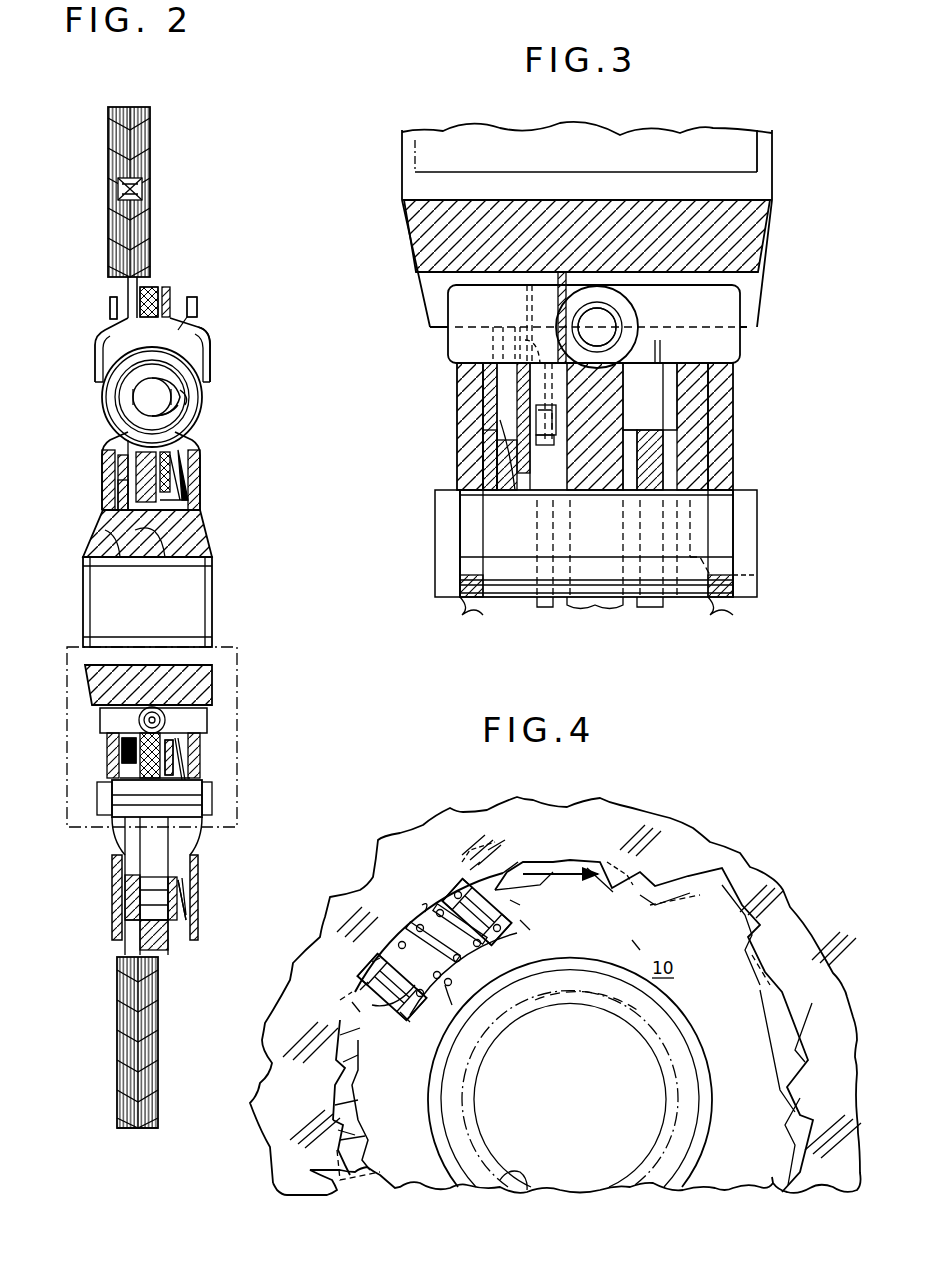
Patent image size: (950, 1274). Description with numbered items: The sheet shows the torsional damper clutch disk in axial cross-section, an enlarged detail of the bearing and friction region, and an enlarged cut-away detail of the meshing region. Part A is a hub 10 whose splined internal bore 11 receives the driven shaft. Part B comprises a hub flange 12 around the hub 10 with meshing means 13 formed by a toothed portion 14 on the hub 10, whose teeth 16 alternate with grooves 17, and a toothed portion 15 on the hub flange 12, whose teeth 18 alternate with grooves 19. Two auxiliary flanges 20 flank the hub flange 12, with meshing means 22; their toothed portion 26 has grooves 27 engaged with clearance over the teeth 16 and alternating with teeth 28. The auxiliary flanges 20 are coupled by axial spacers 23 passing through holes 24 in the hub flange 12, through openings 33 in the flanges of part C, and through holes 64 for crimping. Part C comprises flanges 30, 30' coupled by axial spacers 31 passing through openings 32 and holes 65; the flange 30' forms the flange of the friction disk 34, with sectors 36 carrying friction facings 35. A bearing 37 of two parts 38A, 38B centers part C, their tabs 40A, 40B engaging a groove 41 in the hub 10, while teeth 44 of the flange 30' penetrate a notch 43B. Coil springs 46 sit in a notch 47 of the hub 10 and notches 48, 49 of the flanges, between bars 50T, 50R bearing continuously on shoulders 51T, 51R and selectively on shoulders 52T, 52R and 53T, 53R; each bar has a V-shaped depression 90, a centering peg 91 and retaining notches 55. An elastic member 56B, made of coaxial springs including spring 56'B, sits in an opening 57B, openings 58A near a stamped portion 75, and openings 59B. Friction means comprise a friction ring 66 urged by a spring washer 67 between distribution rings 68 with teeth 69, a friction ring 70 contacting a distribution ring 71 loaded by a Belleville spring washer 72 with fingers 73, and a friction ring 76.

In FIG. 2, the hub 10 is at (210, 530).
In FIG. 3, the hub 10 is at (778, 178).
In FIG. 4, the hub 10 is at (551, 996).
In FIG. 3, the internal bore 11 is at (415, 172).
In FIG. 4, the internal bore 11 is at (535, 1192).
In FIG. 2, the hub flange 12 is at (152, 285).
In FIG. 3, the hub flange 12 is at (606, 608).
In FIG. 4, the hub flange 12 is at (815, 1000).
In FIG. 4, the meshing means 13 is at (738, 962).
In FIG. 4, the toothed portion 14 is at (750, 880).
In FIG. 4, the toothed portion 15 is at (748, 980).
In FIG. 4, the teeth 16 is at (572, 862).
In FIG. 4, the grooves 17 is at (708, 920).
In FIG. 4, the teeth 18 is at (715, 1000).
In FIG. 4, the grooves 19 is at (735, 922).
In FIG. 2, the auxiliary flange 20 is at (112, 880).
In FIG. 3, the auxiliary flange 20 is at (455, 415).
In FIG. 4, the auxiliary flange 20 is at (610, 830).
In FIG. 4, the meshing means 22 is at (605, 895).
In FIG. 2, the axial spacers 23 is at (112, 825).
In FIG. 3, the axial spacers 23 is at (606, 570).
In FIG. 2, the holes 24 is at (125, 780).
In FIG. 3, the holes 24 is at (625, 490).
In FIG. 4, the toothed portion 26 is at (620, 900).
In FIG. 4, the groove 27 is at (555, 862).
In FIG. 4, the teeth 28 is at (355, 1130).
In FIG. 2, the flange 30 is at (215, 298).
In FIG. 3, the flange 30 is at (660, 625).
In FIG. 2, the flange 30' is at (95, 288).
In FIG. 3, the flange 30' is at (529, 625).
In FIG. 2, the axial spacers 31 is at (158, 950).
In FIG. 2, the openings 32 is at (135, 920).
In FIG. 2, the openings 33 is at (120, 760).
In FIG. 2, the friction disk 34 is at (118, 1112).
In FIG. 2, the friction facings 35 is at (148, 1130).
In FIG. 2, the sectors 36 is at (125, 128).
In FIG. 2, the bearing 37 is at (107, 600).
In FIG. 3, the bearing 37 is at (580, 375).
In FIG. 2, the bearing part 38A is at (112, 488).
In FIG. 2, the bearing part 38B is at (118, 680).
In FIG. 3, the bearing part 38B is at (575, 455).
In FIG. 2, the tab 40A is at (112, 530).
In FIG. 3, the tab 40B is at (568, 272).
In FIG. 2, the annular transverse groove 41 is at (160, 535).
In FIG. 3, the notch 43B is at (556, 415).
In FIG. 3, the teeth 44 is at (552, 445).
In FIG. 2, the coil spring 46 is at (155, 706).
In FIG. 3, the coil spring 46 is at (612, 292).
In FIG. 4, the coil spring 46 is at (405, 928).
In FIG. 4, the notch 47 is at (450, 990).
In FIG. 4, the notch 48 is at (475, 850).
In FIG. 4, the notch 49 is at (420, 905).
In FIG. 2, the bar 50R is at (200, 722).
In FIG. 3, the bar 50R is at (745, 298).
In FIG. 4, the bar 50R is at (400, 1015).
In FIG. 4, the bar 50T is at (493, 950).
In FIG. 4, the shoulder 51R is at (405, 1010).
In FIG. 4, the shoulder 51T is at (508, 918).
In FIG. 4, the shoulder 52R is at (372, 965).
In FIG. 4, the shoulder 52T is at (492, 862).
In FIG. 4, the shoulder 53R is at (360, 992).
In FIG. 4, the shoulder 53T is at (470, 870).
In FIG. 3, the notch 55 is at (540, 335).
In FIG. 2, the elastic member 56B is at (208, 390).
In FIG. 2, the coil spring 56'B is at (225, 398).
In FIG. 2, the opening 57B is at (150, 305).
In FIG. 2, the opening 58A is at (208, 356).
In FIG. 2, the opening 59B is at (110, 310).
In FIG. 2, the holes 64 is at (205, 800).
In FIG. 2, the holes 65 is at (186, 925).
In FIG. 3, the friction ring 66 is at (488, 438).
In FIG. 3, the spring washer 67 is at (510, 480).
In FIG. 3, the distribution rings 68 is at (495, 460).
In FIG. 3, the teeth 69 is at (500, 330).
In FIG. 3, the friction ring 70 is at (670, 385).
In FIG. 3, the distribution ring 71 is at (700, 388).
In FIG. 3, the Belleville spring washer 72 is at (735, 505).
In FIG. 3, the fingers 73 is at (752, 572).
In FIG. 2, the annular stamped portion 75 is at (115, 855).
In FIG. 3, the friction ring 76 is at (460, 500).
In FIG. 4, the V-shaped depression 90 is at (355, 1005).
In FIG. 3, the projecting peg 91 is at (592, 316).
In FIG. 4, the projecting peg 91 is at (455, 908).